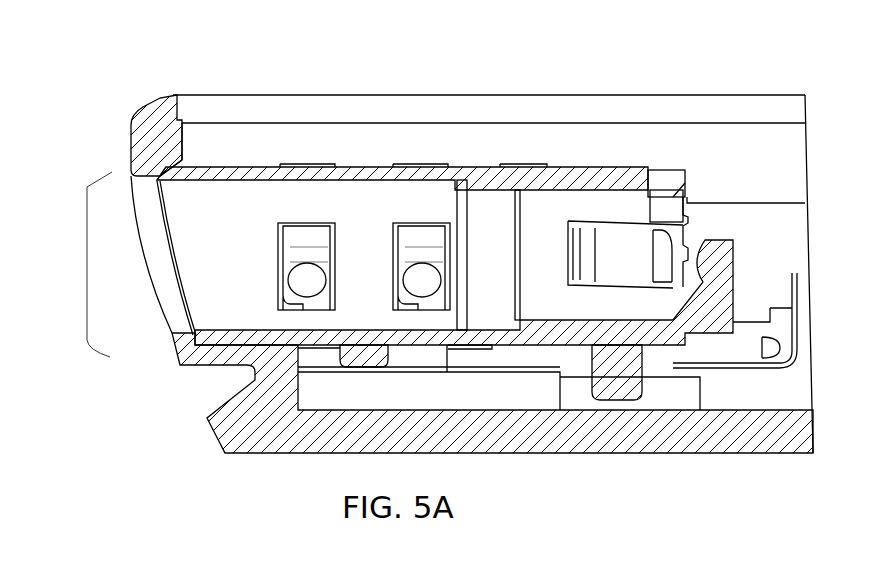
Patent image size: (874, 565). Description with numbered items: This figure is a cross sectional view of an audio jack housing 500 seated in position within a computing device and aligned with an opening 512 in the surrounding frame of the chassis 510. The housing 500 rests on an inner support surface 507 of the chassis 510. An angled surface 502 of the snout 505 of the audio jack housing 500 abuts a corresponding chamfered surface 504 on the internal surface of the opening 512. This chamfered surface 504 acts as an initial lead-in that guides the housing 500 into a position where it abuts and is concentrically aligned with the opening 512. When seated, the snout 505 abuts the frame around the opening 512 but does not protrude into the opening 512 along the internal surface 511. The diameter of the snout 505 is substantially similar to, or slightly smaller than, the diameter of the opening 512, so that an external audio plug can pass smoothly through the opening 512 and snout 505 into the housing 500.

The audio jack housing 500 is at (604, 158).
The angled surface 502 is at (176, 174).
The chamfered surface 504 is at (158, 163).
The snout 505 is at (218, 176).
The inner support surface 507 is at (560, 410).
The chassis 510 is at (137, 113).
The internal surface 511 is at (176, 329).
The opening 512 is at (87, 265).